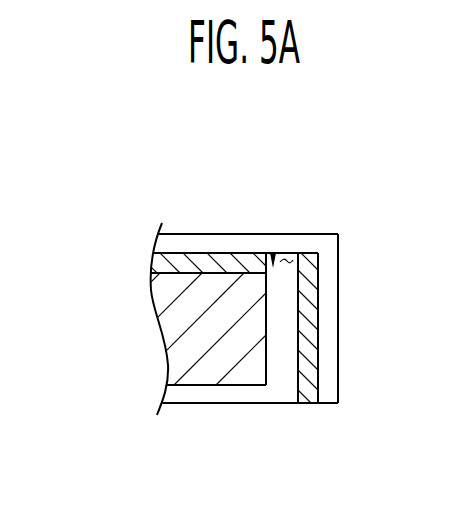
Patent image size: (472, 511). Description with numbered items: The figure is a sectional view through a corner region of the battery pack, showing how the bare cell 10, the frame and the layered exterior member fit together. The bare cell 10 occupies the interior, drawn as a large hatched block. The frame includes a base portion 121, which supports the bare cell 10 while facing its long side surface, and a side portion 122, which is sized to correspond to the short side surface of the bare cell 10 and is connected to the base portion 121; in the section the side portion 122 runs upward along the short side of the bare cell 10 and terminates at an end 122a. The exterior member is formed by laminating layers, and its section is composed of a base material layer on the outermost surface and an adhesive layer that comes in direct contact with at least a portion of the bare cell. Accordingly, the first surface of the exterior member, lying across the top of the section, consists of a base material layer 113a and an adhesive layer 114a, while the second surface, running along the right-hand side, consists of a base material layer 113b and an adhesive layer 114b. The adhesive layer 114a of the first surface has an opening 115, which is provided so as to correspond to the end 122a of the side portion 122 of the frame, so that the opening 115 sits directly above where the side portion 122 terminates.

The bare cell 10 is at (178, 322).
The base material layer 113a is at (183, 243).
The base material layer 113b is at (327, 285).
The adhesive layer 114a is at (162, 262).
The adhesive layer 114b is at (313, 363).
The opening 115 is at (292, 260).
The base portion 121 is at (200, 395).
The side portion 122 is at (280, 320).
The end of the side portion 122a is at (273, 253).